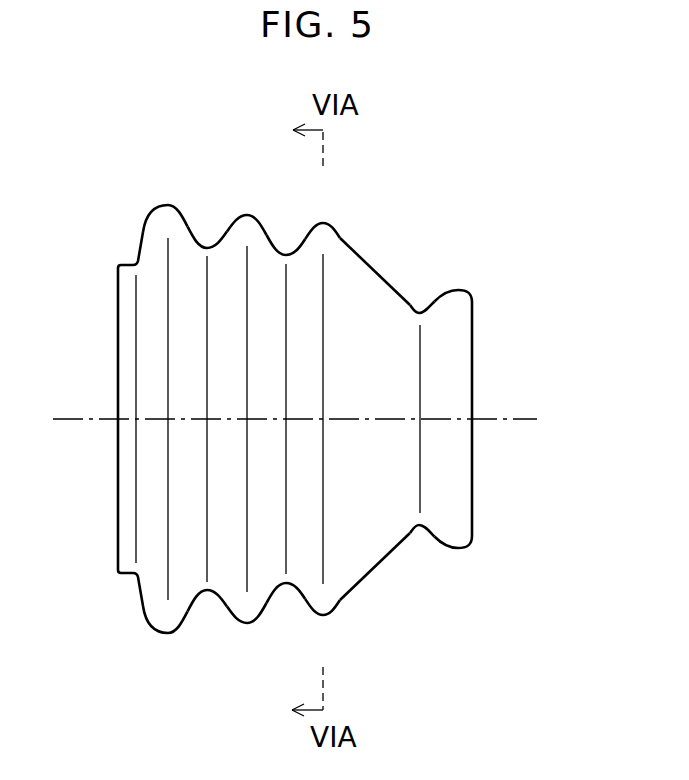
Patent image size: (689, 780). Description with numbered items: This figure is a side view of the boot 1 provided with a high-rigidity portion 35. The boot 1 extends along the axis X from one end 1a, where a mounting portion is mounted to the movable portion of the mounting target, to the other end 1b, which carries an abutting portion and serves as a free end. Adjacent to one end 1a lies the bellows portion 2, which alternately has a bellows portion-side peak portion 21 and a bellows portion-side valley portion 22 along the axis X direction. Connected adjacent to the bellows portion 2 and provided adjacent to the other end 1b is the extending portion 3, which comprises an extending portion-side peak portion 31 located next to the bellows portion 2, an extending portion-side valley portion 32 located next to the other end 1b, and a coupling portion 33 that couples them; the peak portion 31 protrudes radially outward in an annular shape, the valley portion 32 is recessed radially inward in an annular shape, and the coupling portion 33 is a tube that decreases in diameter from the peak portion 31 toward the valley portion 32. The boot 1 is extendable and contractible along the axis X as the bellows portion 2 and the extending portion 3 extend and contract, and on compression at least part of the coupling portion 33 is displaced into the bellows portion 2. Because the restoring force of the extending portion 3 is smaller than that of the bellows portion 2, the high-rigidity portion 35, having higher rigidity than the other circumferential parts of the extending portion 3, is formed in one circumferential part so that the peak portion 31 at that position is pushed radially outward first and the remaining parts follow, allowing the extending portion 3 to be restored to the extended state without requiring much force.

The boot 1 is at (485, 190).
The one end 1a is at (117, 282).
The other end 1b is at (473, 305).
The bellows portion 2 is at (227, 210).
The bellows portion-side peak portion 21 is at (168, 213).
The bellows portion-side valley portion 22 is at (207, 248).
The extending portion 3 is at (405, 265).
The extending portion-side peak portion 31 is at (337, 223).
The extending portion-side valley portion 32 is at (420, 312).
The coupling portion 33 is at (365, 255).
The high-rigidity portion 35 is at (323, 223).
The axis X is at (522, 420).